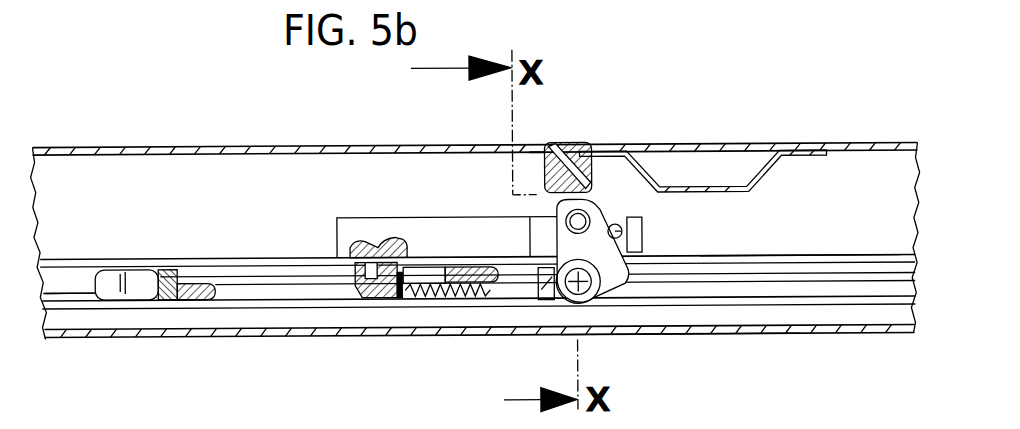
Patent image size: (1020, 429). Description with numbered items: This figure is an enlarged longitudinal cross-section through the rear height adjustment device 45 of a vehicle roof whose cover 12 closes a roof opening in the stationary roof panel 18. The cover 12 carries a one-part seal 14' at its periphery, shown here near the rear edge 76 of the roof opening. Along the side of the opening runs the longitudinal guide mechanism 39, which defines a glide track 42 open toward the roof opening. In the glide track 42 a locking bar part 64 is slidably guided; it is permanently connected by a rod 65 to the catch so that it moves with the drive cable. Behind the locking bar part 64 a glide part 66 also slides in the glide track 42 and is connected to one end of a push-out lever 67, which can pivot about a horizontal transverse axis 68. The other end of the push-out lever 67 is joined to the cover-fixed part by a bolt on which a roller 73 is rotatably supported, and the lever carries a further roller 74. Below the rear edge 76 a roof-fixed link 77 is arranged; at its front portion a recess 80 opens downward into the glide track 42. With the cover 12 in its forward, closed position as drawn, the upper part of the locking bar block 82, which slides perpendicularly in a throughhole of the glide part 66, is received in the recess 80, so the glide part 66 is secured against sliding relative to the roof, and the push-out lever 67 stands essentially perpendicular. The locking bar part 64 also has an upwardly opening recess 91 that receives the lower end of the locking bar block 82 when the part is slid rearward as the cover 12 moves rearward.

The cover 12 is at (130, 145).
The stationary roof panel 18 is at (884, 145).
The longitudinal guide mechanism 39 is at (838, 257).
The glide track 42 is at (787, 265).
The link 77 is at (355, 217).
The recess 80 is at (388, 240).
The locking bar block 82 is at (358, 273).
The glide part 66 is at (533, 258).
The locking bar part 64 is at (142, 283).
The rod 65 is at (73, 283).
The recess 91 is at (193, 283).
The rear edge 76 is at (585, 143).
The seal 14' is at (544, 121).
The push-out lever 67 is at (622, 290).
The roller 73 is at (590, 212).
The roller 74 is at (622, 226).
The horizontal transverse axis 68 is at (592, 303).
The rear height adjustment device 45 is at (681, 368).